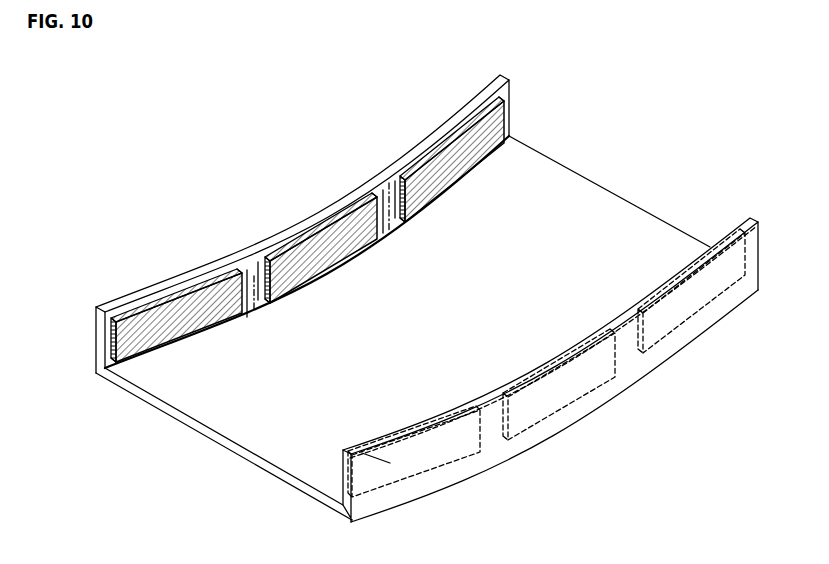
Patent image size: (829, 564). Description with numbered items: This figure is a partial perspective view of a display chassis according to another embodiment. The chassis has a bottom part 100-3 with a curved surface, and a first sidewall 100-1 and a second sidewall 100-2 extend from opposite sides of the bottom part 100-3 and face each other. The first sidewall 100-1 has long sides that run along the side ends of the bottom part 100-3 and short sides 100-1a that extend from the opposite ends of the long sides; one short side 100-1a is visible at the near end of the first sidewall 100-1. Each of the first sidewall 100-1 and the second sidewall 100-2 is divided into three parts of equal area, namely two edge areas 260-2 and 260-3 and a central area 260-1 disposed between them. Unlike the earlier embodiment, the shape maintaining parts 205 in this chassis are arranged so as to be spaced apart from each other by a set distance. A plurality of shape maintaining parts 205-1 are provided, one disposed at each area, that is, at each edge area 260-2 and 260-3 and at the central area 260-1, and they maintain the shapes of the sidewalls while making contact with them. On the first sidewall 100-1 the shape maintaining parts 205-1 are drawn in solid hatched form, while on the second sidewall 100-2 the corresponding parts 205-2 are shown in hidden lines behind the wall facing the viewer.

The first sidewall 100-1 is at (318, 215).
The short side 100-1a is at (96, 329).
The second sidewall 100-2 is at (757, 222).
The bottom part 100-3 is at (603, 207).
The shape maintaining parts 205 is at (411, 301).
The shape maintaining part 205-1 is at (203, 320).
The second holder (hidden) 205-2 is at (343, 449).
The central area 260-1 is at (381, 188).
The edge area 260-2 is at (247, 270).
The edge area 260-3 is at (397, 181).